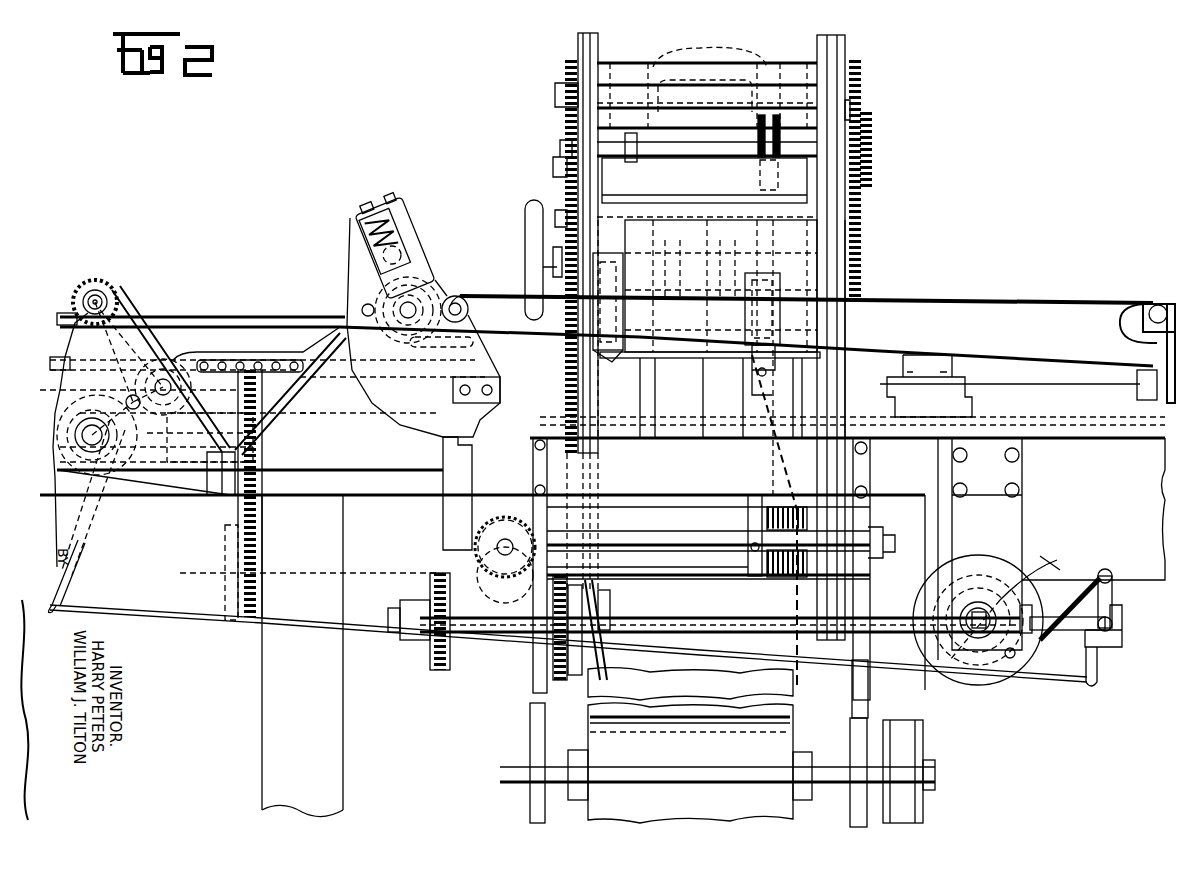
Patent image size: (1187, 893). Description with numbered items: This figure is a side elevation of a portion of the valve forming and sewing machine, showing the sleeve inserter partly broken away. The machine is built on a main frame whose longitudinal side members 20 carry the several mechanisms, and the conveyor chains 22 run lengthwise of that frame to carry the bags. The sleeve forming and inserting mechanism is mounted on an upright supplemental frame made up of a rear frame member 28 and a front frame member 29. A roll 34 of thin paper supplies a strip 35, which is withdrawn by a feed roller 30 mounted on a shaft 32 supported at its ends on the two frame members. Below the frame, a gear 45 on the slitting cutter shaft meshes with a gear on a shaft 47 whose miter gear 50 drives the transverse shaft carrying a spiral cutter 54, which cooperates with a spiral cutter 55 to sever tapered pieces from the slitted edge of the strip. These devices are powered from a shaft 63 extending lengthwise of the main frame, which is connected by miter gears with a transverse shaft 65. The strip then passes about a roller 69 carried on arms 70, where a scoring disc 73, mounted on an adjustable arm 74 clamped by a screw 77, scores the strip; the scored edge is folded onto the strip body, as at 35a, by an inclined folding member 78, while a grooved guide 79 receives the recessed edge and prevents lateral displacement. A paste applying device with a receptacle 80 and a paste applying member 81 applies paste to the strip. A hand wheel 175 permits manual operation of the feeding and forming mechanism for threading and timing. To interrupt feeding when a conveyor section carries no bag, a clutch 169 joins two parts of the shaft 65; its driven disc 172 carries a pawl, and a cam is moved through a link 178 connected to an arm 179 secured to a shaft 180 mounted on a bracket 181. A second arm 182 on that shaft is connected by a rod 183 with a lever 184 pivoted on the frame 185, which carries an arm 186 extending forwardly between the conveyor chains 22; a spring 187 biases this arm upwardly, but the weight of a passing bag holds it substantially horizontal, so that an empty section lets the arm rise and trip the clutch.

The feed roller 30 is at (690, 50).
The shaft 32 is at (688, 95).
The receptacle 80 is at (685, 185).
The paste applying member 81 is at (762, 160).
The grooved guide 79 is at (612, 268).
The folding member 78 is at (780, 280).
The hand wheel 175 is at (527, 268).
The arm 186 is at (253, 320).
The conveyor chains 22 is at (290, 358).
The frame 185 is at (110, 405).
The spring 187 is at (70, 430).
The rear frame member 28 is at (582, 395).
The folded edge portion of strip 35a is at (780, 378).
The front frame member 29 is at (836, 396).
The lever 184 is at (68, 590).
The rod 183 is at (140, 612).
The longitudinal side members 20 is at (362, 570).
The shaft 47 is at (505, 539).
The miter gear 50 is at (508, 570).
The gear 45 is at (520, 620).
The spiral cutter 54 is at (598, 583).
The spiral cutter 55 is at (600, 660).
The roller 69 is at (655, 522).
The scoring disc 73 is at (778, 507).
The arm 74 is at (748, 522).
The screw 77 is at (748, 552).
The strip 35 is at (797, 591).
The shaft 63 is at (746, 620).
The roll 34 is at (690, 784).
The arms 70 is at (862, 727).
The shaft 65 is at (980, 630).
The clutch 169 is at (1045, 554).
The driven disc 172 is at (1022, 602).
The link 178 is at (1100, 577).
The arm 179 is at (1112, 601).
The shaft 180 is at (1111, 623).
The bracket 181 is at (1122, 640).
The second arm 182 is at (1097, 660).